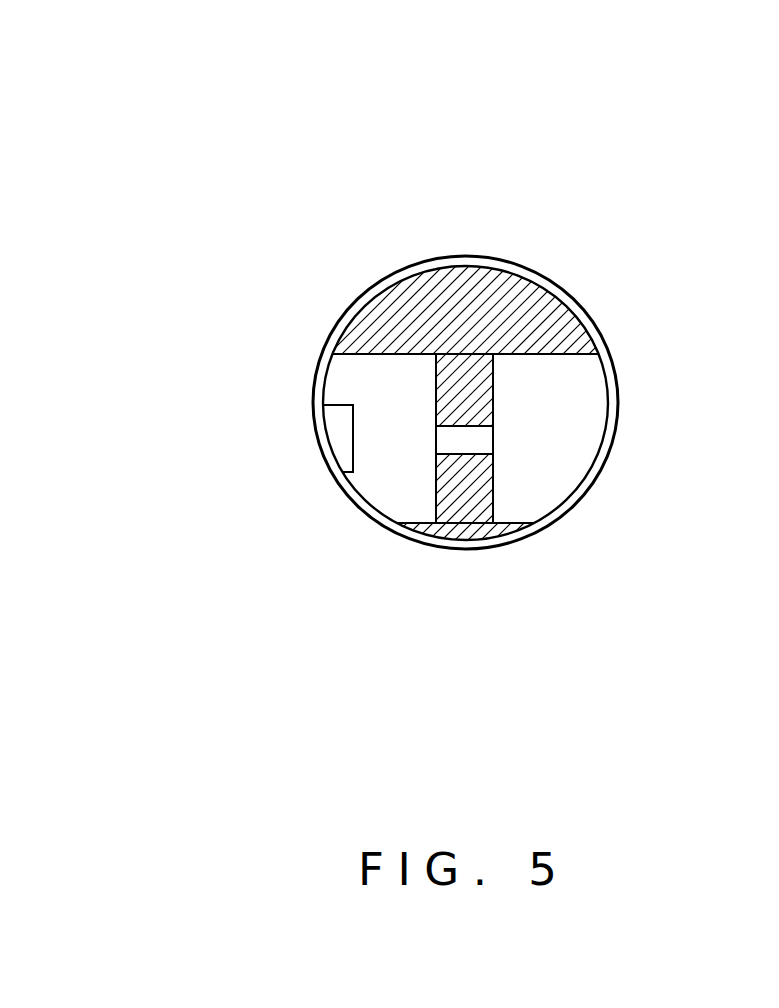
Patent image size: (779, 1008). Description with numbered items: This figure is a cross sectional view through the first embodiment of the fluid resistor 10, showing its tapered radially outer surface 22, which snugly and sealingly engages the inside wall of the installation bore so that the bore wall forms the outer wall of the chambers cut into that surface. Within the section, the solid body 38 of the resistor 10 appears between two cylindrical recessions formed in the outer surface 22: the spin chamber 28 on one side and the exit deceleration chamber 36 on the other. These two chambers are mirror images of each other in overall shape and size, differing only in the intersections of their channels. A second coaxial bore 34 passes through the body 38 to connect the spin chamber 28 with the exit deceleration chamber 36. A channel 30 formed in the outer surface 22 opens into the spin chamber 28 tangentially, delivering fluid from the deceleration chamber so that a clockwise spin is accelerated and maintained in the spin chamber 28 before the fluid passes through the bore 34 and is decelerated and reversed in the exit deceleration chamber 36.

The fluid resistor 10 is at (553, 126).
The radially outer surface 22 is at (565, 288).
The spin chamber 28 is at (393, 487).
The channel 30 is at (342, 437).
The second coaxial bore 34 is at (484, 438).
The exit deceleration chamber 36 is at (557, 470).
The body 38 is at (397, 316).